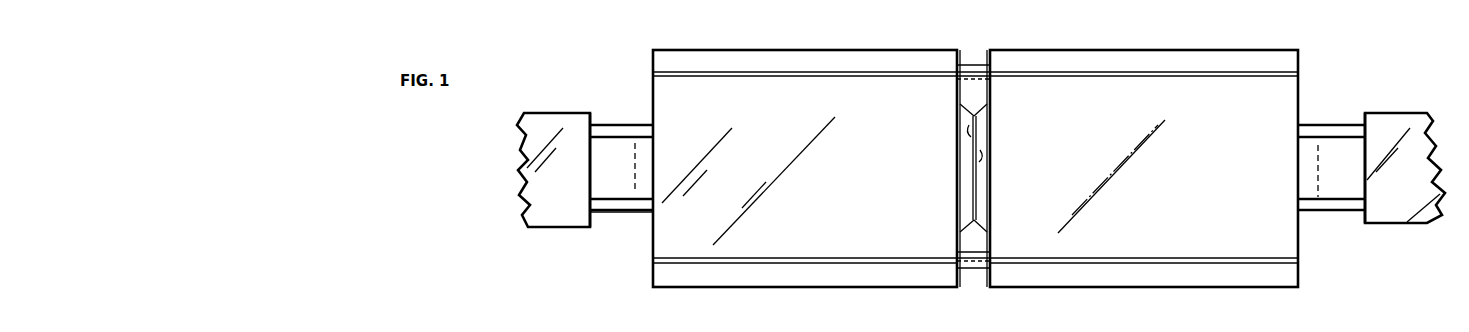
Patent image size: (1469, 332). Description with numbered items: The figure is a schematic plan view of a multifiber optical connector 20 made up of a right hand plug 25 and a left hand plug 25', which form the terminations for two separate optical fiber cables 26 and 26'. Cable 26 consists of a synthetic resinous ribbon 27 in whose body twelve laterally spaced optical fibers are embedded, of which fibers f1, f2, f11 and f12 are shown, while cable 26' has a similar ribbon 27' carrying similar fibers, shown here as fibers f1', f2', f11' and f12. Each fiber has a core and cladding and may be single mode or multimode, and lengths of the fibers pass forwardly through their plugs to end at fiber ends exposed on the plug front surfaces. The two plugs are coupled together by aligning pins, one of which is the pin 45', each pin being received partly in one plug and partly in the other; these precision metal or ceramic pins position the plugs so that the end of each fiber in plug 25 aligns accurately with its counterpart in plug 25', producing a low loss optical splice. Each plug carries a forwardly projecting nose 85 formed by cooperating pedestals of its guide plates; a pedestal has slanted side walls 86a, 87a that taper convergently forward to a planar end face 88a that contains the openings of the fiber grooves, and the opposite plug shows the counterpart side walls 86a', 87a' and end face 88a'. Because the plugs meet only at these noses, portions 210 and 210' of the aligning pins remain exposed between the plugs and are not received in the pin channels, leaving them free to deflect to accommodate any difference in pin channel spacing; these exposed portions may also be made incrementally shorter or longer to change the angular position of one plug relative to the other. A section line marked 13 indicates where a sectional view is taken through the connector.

The multifiber optical connector 20 is at (992, 25).
The left hand plug 25' is at (805, 155).
The right hand plug 25 is at (1144, 155).
The aligning pin 45' is at (942, 169).
The exposed pin portion 210 is at (1009, 93).
The exposed pin portion 210' is at (1006, 236).
The nose 85 is at (990, 165).
The slanted side wall 87a' is at (936, 100).
The slanted side wall 86a is at (1006, 102).
The pedestal end face 88a is at (1001, 135).
The pedestal end face 88a' is at (939, 158).
The slanted side wall 86a' is at (938, 235).
The slanted side wall 87a is at (1002, 238).
The optical fiber cable 26' is at (553, 154).
The synthetic resinous ribbon 27' is at (563, 183).
The optical fiber cable 26 is at (1405, 152).
The synthetic resinous ribbon 27 is at (1388, 183).
The optical fiber f11' is at (621, 108).
The optical fiber f12 is at (612, 139).
The optical fiber f2' is at (621, 171).
The optical fiber f1' is at (621, 230).
The optical fiber f1 is at (1331, 110).
The optical fiber f2 is at (1331, 167).
The optical fiber f11 is at (1331, 185).
The section line 13- 13 is at (1216, 88).